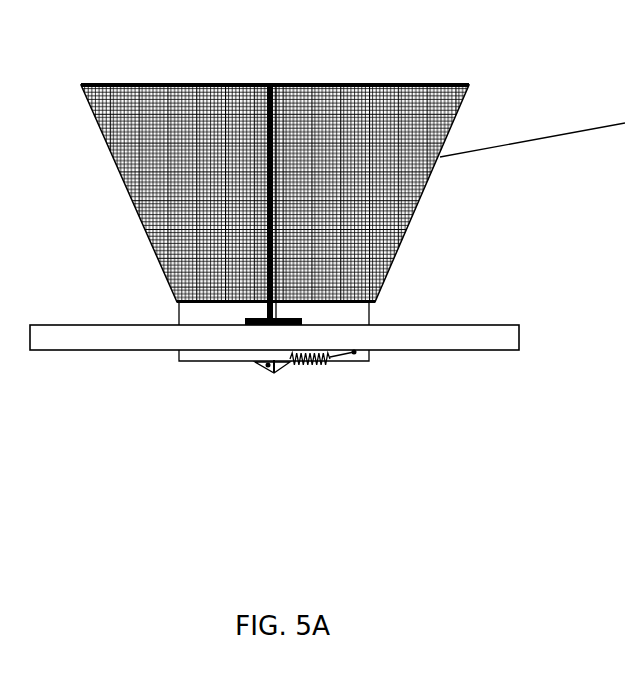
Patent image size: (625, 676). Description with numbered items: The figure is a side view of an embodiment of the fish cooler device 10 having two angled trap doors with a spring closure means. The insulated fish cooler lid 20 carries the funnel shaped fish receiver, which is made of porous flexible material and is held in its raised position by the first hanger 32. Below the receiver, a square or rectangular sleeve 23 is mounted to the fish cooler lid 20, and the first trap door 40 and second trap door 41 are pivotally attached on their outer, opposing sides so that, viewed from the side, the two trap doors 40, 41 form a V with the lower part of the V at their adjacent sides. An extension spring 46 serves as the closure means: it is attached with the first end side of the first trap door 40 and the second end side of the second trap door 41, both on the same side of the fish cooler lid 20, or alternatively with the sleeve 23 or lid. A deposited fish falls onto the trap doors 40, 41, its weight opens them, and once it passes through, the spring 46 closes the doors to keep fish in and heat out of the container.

The fish cooler device 10 is at (553, 313).
The fish cooler lid 20 is at (422, 340).
The sleeve 23 is at (370, 312).
The first hanger 32 is at (262, 85).
The trap door 40 is at (262, 363).
The second trap door 41 is at (278, 364).
The extension spring 46 is at (322, 360).